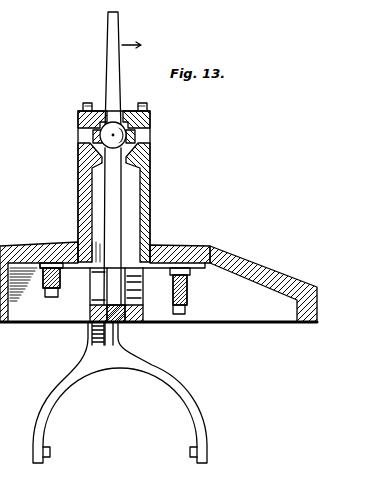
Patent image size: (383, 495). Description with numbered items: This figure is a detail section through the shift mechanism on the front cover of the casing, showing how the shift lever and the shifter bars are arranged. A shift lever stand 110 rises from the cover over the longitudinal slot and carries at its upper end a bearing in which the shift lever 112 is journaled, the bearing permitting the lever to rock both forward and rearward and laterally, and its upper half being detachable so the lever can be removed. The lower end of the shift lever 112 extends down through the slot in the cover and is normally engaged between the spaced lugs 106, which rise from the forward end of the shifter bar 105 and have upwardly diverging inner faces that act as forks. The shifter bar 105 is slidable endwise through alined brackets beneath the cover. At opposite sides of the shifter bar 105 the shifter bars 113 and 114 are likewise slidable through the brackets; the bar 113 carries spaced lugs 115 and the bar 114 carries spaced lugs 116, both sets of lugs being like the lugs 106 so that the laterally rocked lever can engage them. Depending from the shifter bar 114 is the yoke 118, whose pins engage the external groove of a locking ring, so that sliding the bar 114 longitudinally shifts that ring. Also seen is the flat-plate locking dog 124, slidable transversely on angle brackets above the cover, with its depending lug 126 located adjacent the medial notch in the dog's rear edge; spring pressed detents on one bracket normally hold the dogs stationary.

The shifter bar 105 is at (117, 325).
The spaced lugs 106 is at (158, 245).
The shift lever stand 110 is at (151, 201).
The shift lever 112 is at (108, 62).
The shifter bar 113 is at (152, 323).
The shifter bar 114 is at (83, 323).
The spaced lugs 115 is at (147, 293).
The spaced lugs 116 is at (100, 288).
The yoke 118 is at (197, 410).
The locking dog 124 is at (233, 263).
The lug 126 is at (190, 245).